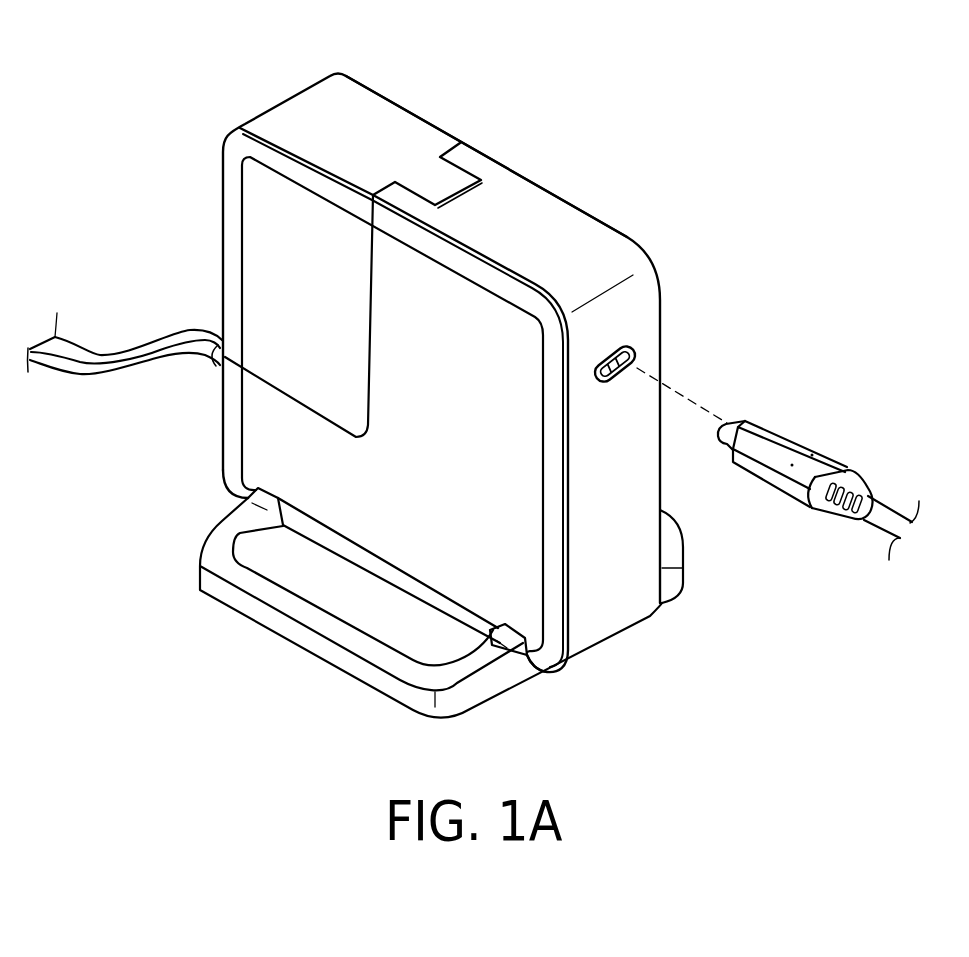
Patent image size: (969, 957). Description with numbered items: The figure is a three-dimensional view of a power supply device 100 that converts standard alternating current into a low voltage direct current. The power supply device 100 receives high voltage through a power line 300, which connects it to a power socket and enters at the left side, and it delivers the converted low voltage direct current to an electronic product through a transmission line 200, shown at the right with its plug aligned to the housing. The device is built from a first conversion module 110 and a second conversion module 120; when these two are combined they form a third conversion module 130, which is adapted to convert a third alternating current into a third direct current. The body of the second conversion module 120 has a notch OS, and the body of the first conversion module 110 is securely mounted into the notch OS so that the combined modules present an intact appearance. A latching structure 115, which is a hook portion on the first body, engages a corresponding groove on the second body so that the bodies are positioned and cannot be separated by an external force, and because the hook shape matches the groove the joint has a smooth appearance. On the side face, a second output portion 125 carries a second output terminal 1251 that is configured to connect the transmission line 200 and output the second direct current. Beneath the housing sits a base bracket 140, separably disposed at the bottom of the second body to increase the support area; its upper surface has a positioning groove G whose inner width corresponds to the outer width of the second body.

The power supply device 100 is at (512, 399).
The first conversion module 110 is at (267, 207).
The latching structure 115 is at (438, 183).
The second conversion module 120 is at (510, 537).
The second output portion 125 is at (624, 345).
The second output terminal 1251 is at (635, 356).
The third conversion module 130 is at (403, 91).
The base bracket 140 is at (317, 618).
The transmission line 200 is at (888, 522).
The power line 300 is at (104, 372).
The notch OS is at (277, 395).
The positioning groove G is at (560, 668).